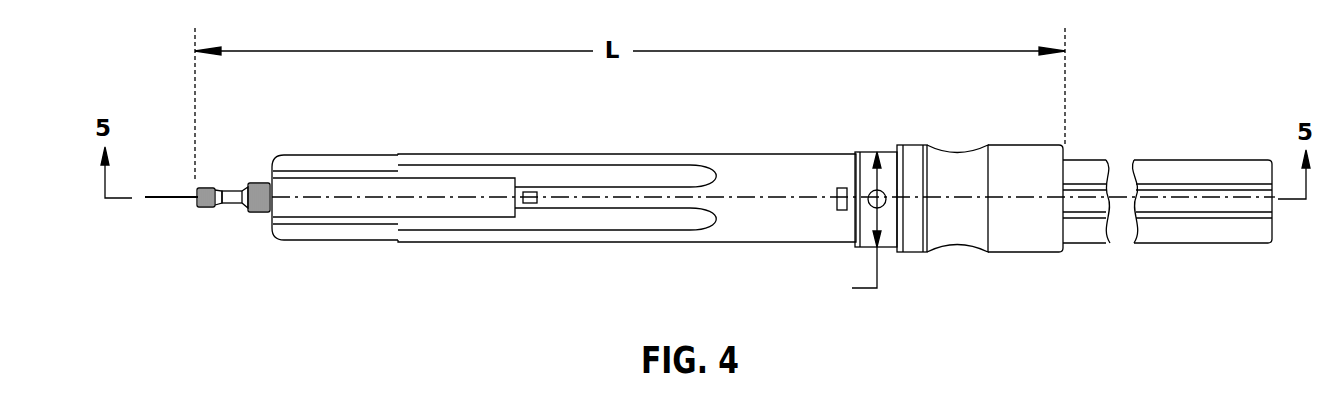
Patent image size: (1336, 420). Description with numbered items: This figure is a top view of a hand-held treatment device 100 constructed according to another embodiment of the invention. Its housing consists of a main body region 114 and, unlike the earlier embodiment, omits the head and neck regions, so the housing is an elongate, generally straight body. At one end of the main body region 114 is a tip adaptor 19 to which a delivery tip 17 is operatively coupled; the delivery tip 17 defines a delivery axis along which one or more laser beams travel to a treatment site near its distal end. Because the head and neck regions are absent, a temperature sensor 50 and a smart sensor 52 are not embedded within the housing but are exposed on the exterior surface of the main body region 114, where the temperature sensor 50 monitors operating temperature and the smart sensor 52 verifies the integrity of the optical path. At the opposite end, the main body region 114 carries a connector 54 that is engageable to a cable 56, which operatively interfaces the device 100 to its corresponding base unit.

The delivery tip 17 is at (172, 195).
The tip adaptor 19 is at (207, 212).
The temperature sensor 50 is at (627, 198).
The smart sensor 52 is at (529, 192).
The connector 54 is at (1027, 246).
The cable 56 is at (1183, 170).
The hand-held treatment device 100 is at (772, 188).
The main body region 114 is at (564, 195).